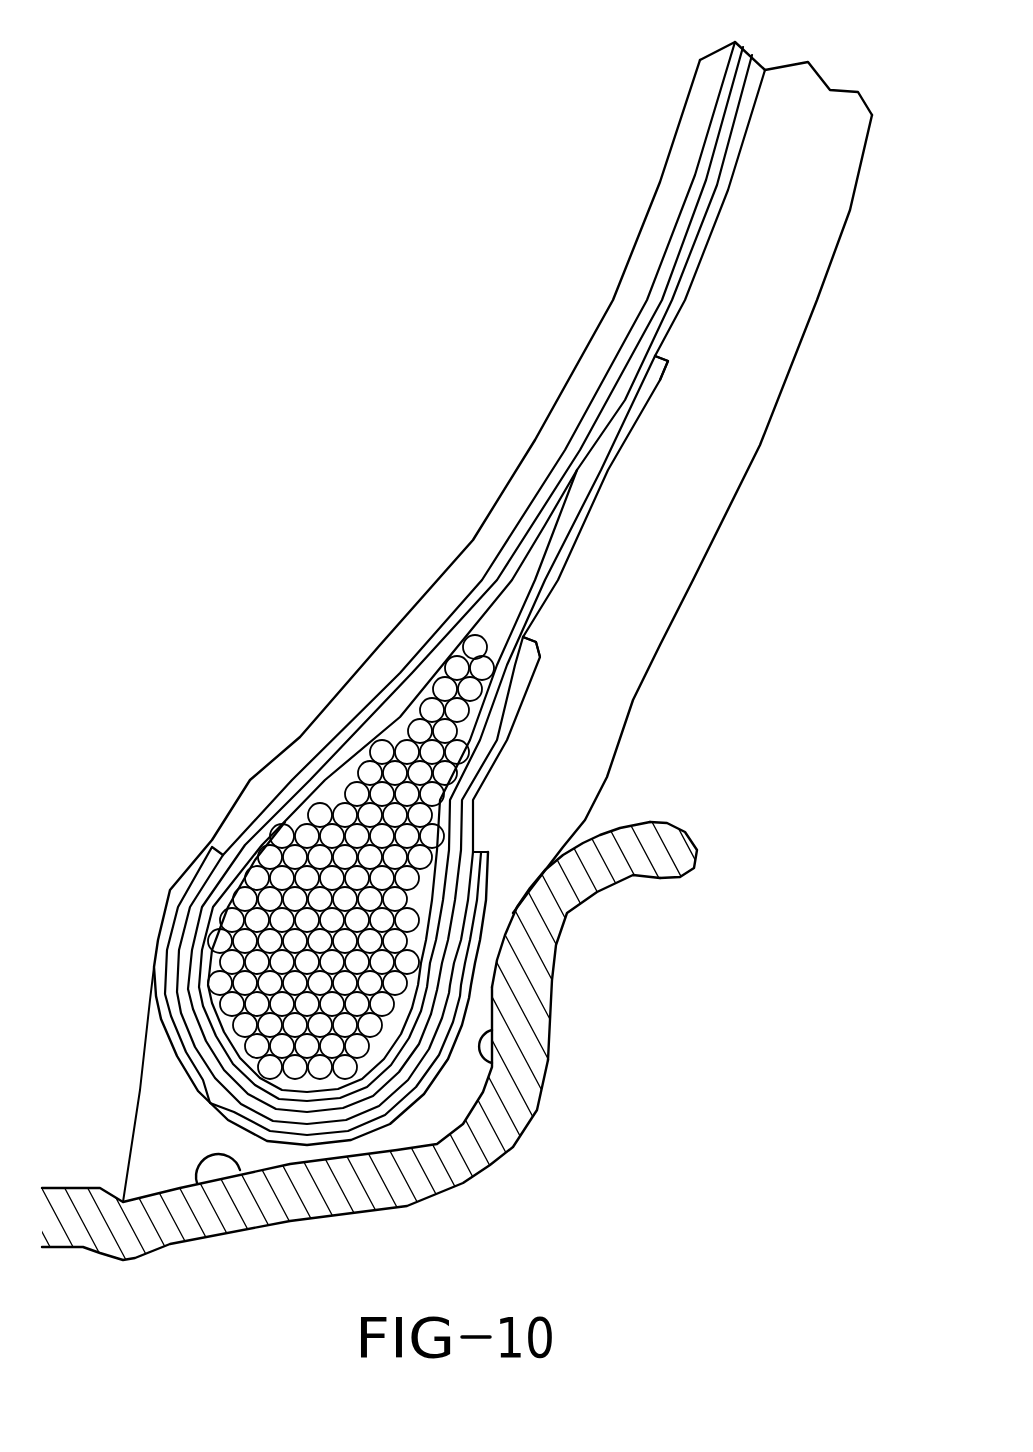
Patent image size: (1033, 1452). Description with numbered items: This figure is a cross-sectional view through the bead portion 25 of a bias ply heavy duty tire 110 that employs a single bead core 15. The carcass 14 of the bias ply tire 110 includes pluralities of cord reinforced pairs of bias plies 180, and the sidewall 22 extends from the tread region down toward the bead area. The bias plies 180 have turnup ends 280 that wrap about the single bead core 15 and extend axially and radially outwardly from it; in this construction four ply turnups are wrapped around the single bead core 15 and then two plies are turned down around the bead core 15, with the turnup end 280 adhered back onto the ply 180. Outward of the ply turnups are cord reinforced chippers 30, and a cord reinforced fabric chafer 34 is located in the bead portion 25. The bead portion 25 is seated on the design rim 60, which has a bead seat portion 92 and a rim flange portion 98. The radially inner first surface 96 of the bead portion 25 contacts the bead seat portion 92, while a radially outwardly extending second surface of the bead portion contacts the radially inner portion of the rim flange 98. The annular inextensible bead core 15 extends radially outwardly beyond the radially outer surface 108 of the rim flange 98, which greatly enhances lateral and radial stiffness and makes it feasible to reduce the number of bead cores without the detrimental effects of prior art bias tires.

The bias ply tire 110 is at (494, 255).
The carcass 14 is at (518, 430).
The sidewall 22 is at (808, 114).
The bias ply 180 is at (718, 165).
The ply turnup end 280 is at (645, 375).
The chipper 30 is at (633, 607).
The bead portion 25 is at (250, 752).
The bead core 15 is at (290, 855).
The fabric chafer 34 is at (177, 1033).
The design rim 60 is at (638, 884).
The radially outer surface of rim flange 108 is at (648, 820).
The rim flange portion 98 is at (493, 1063).
The radially inner first surface 96 is at (207, 1187).
The bead seat portion 92 is at (347, 1190).